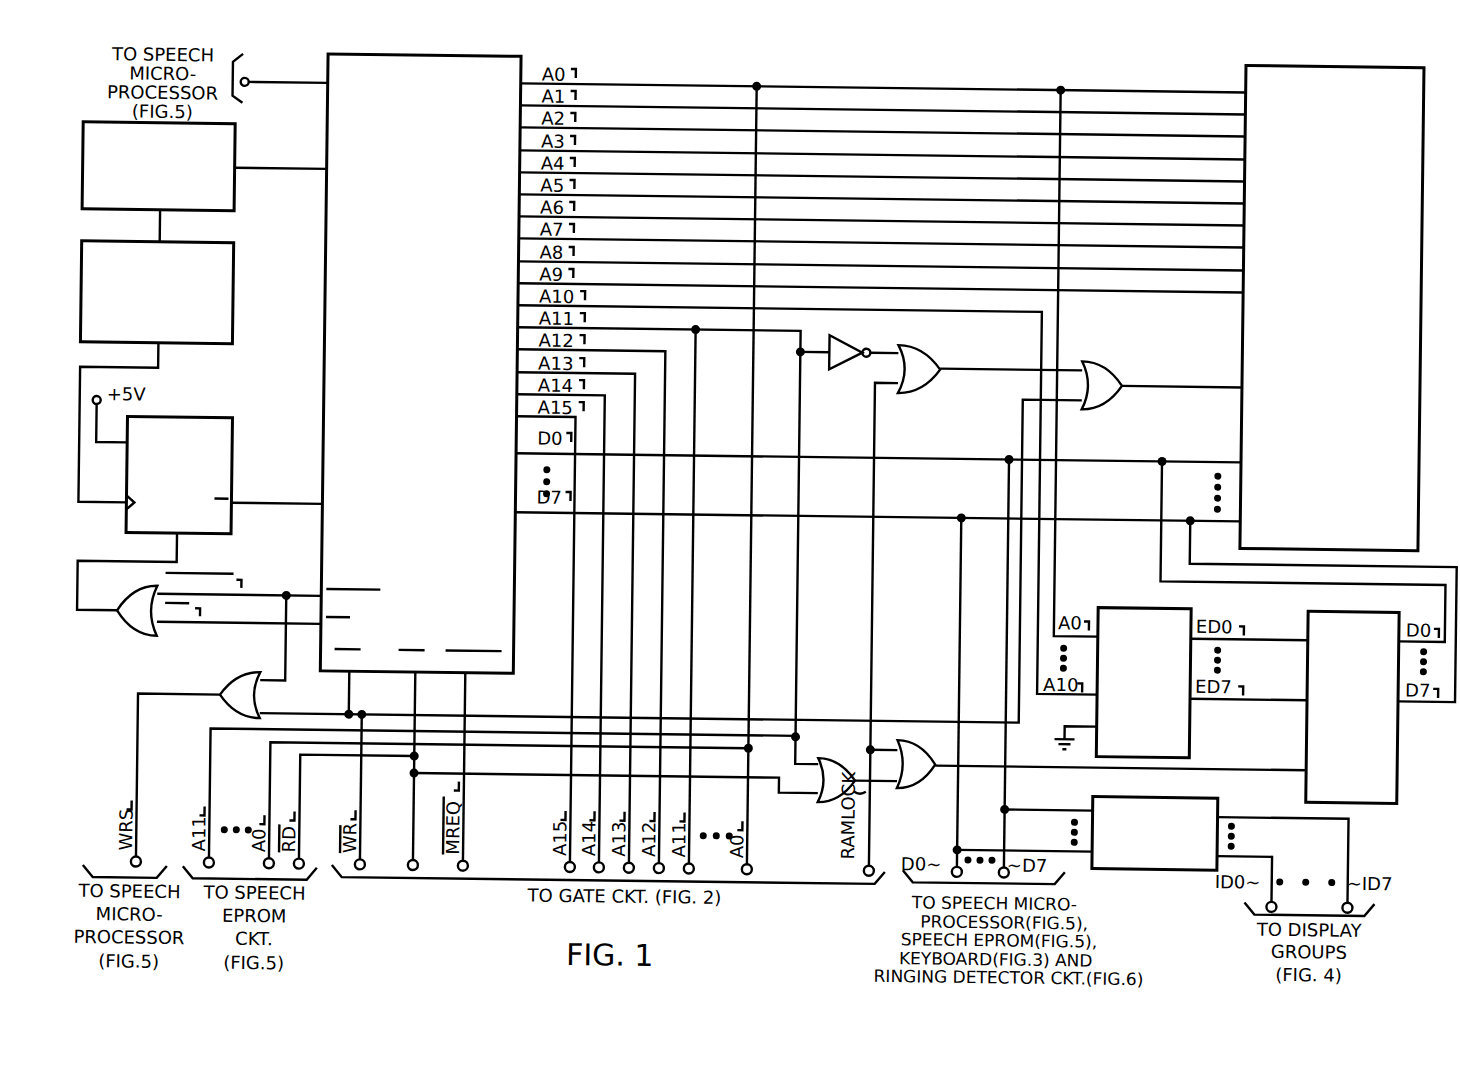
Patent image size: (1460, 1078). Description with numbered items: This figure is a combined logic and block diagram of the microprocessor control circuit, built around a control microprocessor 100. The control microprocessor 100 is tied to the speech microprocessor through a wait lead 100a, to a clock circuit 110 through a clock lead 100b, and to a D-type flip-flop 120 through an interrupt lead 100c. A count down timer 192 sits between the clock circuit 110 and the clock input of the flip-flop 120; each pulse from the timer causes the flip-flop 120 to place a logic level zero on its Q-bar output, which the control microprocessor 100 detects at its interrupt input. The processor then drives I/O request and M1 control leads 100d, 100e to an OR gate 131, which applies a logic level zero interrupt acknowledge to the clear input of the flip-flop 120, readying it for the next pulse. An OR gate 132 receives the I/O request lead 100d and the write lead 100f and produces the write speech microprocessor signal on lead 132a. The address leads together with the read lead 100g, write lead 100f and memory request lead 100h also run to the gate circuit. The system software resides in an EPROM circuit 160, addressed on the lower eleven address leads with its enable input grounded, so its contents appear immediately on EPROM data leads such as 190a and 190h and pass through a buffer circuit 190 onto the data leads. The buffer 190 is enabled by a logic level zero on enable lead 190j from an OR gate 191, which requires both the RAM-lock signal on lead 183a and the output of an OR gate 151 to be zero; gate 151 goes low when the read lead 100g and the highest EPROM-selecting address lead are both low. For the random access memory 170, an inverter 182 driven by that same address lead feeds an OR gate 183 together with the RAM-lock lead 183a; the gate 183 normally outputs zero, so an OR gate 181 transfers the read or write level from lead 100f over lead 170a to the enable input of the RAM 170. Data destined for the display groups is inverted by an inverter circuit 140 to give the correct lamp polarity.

The control microprocessor 100 is at (402, 339).
The wait lead 100a is at (315, 82).
The clock lead 100b is at (304, 169).
The interrupt lead 100c is at (302, 505).
The I/O request lead 100d is at (310, 590).
The M1 control lead 100e is at (287, 624).
The write lead 100f is at (671, 559).
The read lead 100g is at (387, 765).
The memory request lead 100h is at (497, 767).
The clock circuit 110 is at (139, 206).
The count down timer 192 is at (156, 292).
The D-type flip-flop 120 is at (213, 424).
The OR gate 131 is at (118, 636).
The OR gate 132 is at (255, 669).
The write speech microprocessor lead 132a is at (195, 692).
The inverter 182 is at (838, 334).
The OR gate 183 is at (928, 350).
The RAM-lock lead 183a is at (901, 625).
The OR gate 181 is at (1100, 357).
The random access memory 170 is at (1305, 333).
The enable lead 170a is at (1203, 371).
The EPROM circuit 160 is at (1128, 708).
The buffer circuit 190 is at (1331, 726).
The EPROM data lead 190a is at (1305, 642).
The EPROM data lead 190h is at (1305, 704).
The enable lead 190j is at (1299, 775).
The inverter circuit 140 is at (1162, 792).
The OR gate 151 is at (844, 753).
The OR gate 191 is at (951, 742).